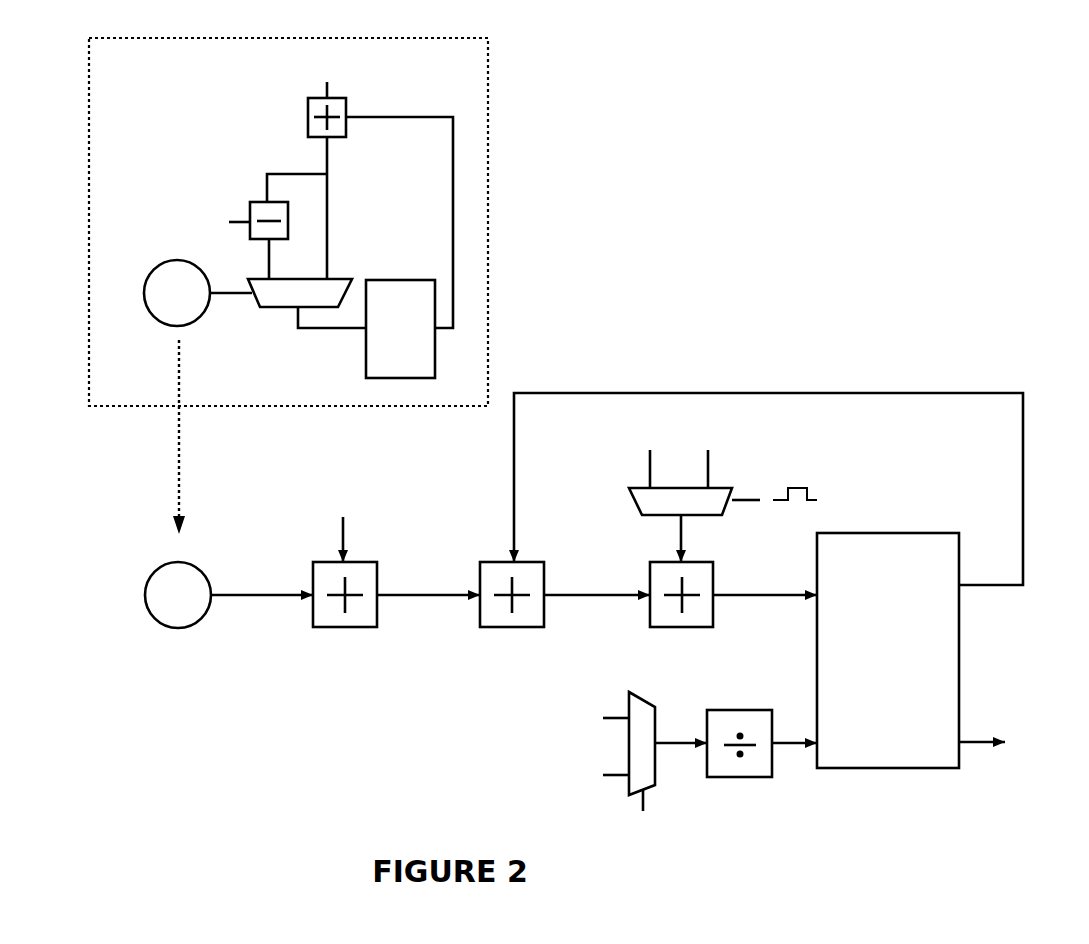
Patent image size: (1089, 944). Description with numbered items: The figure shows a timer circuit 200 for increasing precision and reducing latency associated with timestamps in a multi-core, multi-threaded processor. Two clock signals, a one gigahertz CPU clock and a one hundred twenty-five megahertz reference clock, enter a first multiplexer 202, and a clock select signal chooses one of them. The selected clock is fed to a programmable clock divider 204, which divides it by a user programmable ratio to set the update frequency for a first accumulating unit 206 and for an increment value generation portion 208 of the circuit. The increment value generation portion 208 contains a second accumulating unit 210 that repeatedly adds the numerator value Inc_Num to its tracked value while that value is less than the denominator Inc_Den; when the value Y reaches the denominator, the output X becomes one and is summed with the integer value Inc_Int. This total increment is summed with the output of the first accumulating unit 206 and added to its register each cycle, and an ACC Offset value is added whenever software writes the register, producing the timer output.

The timer circuit 200 is at (972, 180).
The first multiplexer 202 is at (645, 698).
The programmable clock divider 204 is at (730, 710).
The first accumulating unit 206 is at (890, 768).
The increment value generation portion 208 is at (527, 128).
The second accumulating unit 210 is at (405, 280).